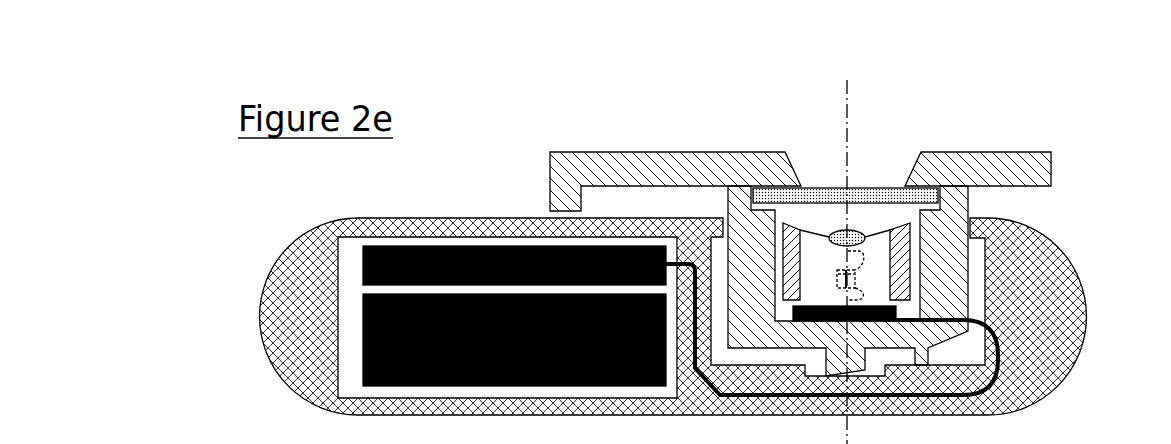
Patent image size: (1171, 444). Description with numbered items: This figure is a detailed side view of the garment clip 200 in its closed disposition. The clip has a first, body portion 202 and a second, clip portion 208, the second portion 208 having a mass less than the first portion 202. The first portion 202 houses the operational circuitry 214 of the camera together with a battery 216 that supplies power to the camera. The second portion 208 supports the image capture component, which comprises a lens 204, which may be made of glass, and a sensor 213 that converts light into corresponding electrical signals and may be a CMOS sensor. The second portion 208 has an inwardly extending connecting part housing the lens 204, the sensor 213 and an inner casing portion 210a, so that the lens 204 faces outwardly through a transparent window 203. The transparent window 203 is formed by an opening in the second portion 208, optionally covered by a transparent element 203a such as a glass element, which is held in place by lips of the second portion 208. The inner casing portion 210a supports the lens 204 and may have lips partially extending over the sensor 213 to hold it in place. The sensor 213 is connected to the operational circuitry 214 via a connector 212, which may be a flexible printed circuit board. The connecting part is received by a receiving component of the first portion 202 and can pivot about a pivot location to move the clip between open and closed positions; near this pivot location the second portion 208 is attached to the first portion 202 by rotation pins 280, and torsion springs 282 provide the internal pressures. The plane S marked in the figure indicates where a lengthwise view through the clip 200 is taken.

The garment clip 200 is at (363, 190).
The first portion 202 is at (592, 400).
The lens 204 is at (813, 181).
The second portion 208 is at (722, 149).
The transparent window 203 is at (893, 157).
The transparent element 203a is at (893, 179).
The inner casing portion 210a is at (888, 228).
The sensor 213 is at (888, 297).
The connector 212 is at (925, 390).
The operational circuitry 214 is at (403, 240).
The battery 216 is at (447, 378).
The rotation pins 280 is at (834, 270).
The torsion springs 282 is at (855, 248).